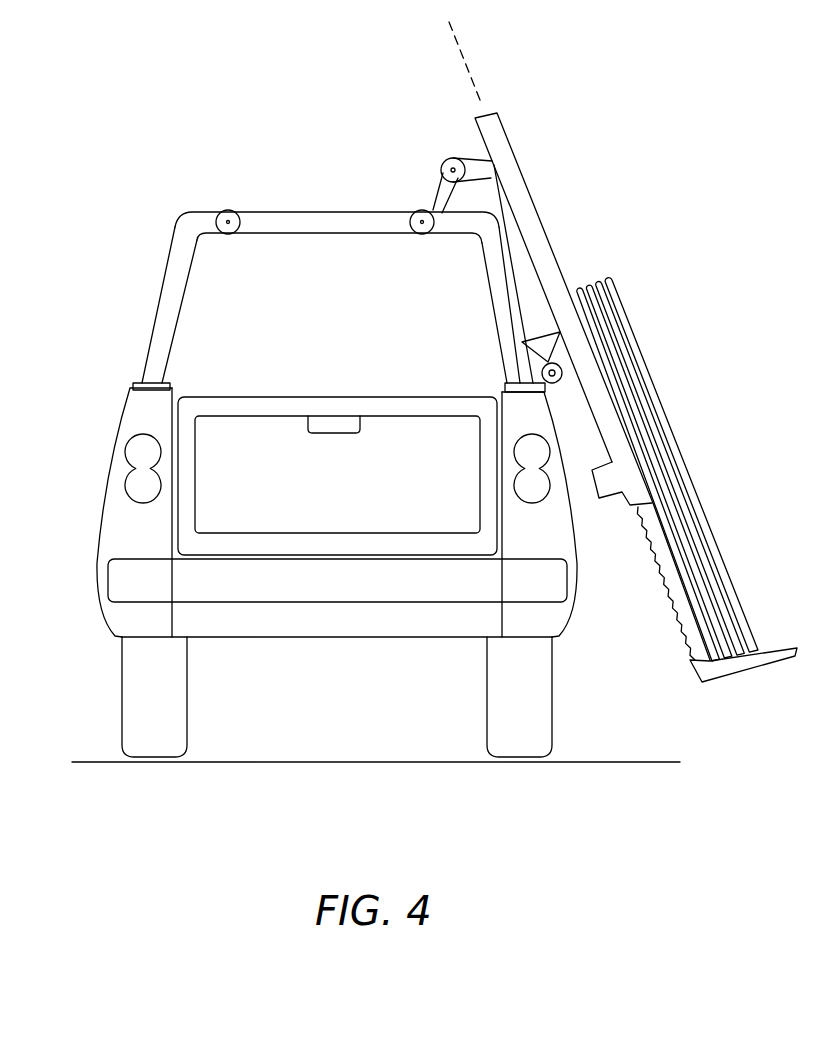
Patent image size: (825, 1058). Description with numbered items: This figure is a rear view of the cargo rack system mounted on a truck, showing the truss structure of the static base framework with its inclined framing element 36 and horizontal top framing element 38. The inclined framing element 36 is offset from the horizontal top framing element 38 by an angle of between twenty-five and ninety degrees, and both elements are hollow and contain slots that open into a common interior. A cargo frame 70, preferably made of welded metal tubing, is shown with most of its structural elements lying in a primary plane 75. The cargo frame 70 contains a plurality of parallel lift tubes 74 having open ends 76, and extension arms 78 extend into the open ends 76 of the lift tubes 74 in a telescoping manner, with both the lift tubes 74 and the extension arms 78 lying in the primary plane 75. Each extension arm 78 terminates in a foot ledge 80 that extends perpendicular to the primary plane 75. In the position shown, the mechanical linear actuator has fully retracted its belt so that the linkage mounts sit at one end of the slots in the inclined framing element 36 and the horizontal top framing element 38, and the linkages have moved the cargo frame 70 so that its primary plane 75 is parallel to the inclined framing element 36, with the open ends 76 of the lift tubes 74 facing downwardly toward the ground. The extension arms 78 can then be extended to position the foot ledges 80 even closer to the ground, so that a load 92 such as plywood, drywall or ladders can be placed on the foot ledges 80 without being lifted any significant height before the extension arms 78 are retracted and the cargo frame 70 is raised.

The inclined framing element 36 is at (503, 302).
The horizontal top framing element 38 is at (325, 223).
The cargo frame 70 is at (534, 200).
The lift tubes 74 is at (538, 245).
The primary plane 75 is at (464, 60).
The open ends 76 is at (645, 512).
The extension arms 78 is at (678, 603).
The foot ledge 80 is at (708, 670).
The load 92 is at (672, 442).